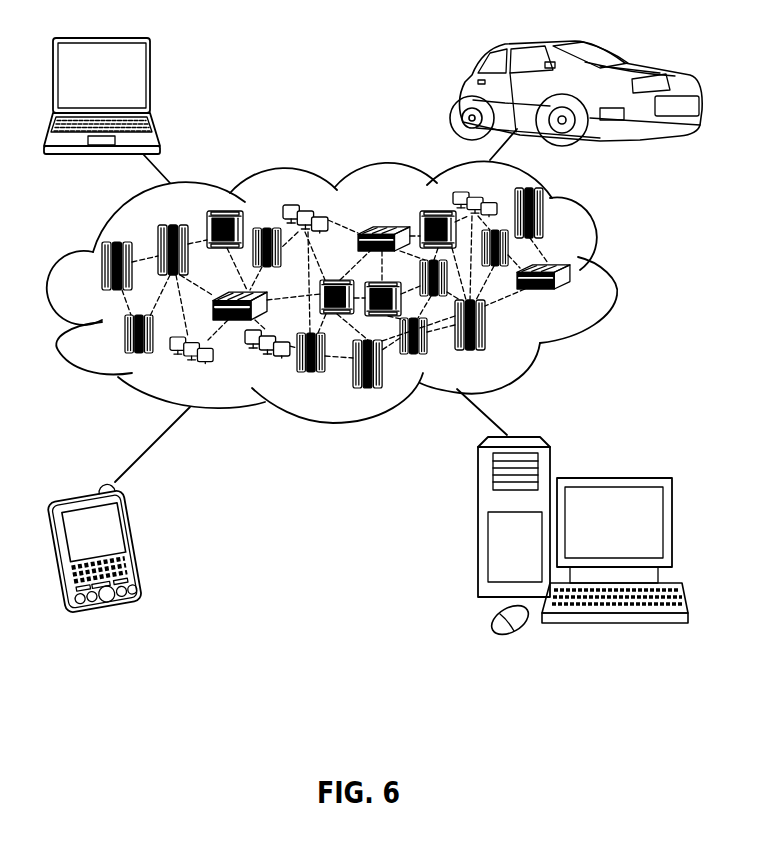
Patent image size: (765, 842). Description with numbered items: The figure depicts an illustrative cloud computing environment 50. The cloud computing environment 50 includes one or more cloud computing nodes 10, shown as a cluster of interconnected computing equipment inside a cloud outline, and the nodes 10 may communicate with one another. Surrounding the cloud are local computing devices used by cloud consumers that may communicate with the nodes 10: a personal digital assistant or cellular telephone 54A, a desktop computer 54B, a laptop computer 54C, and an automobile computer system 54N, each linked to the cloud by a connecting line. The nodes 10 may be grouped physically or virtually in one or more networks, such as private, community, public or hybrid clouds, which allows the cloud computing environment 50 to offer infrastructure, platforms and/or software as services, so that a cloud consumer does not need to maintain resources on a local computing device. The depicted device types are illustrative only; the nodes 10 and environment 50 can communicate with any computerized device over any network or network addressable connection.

The cloud computing nodes 10 is at (572, 297).
The cloud computing environment 50 is at (612, 273).
The personal digital assistant or cellular telephone 54A is at (145, 546).
The desktop computer 54B is at (622, 463).
The laptop computer 54C is at (150, 82).
The automobile computer system 54N is at (458, 90).